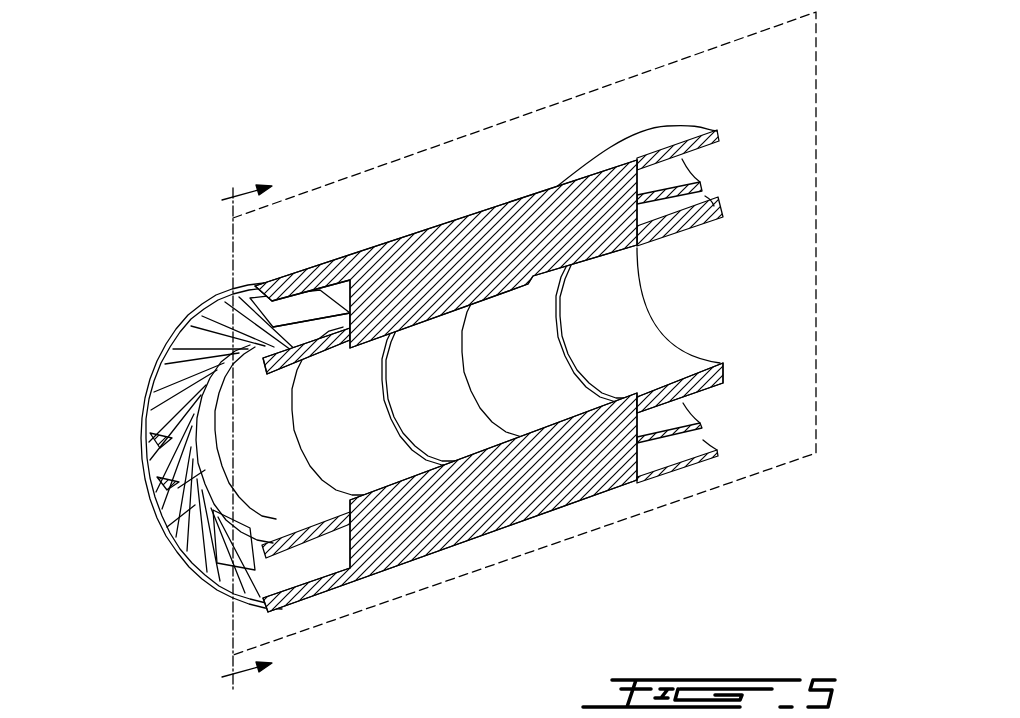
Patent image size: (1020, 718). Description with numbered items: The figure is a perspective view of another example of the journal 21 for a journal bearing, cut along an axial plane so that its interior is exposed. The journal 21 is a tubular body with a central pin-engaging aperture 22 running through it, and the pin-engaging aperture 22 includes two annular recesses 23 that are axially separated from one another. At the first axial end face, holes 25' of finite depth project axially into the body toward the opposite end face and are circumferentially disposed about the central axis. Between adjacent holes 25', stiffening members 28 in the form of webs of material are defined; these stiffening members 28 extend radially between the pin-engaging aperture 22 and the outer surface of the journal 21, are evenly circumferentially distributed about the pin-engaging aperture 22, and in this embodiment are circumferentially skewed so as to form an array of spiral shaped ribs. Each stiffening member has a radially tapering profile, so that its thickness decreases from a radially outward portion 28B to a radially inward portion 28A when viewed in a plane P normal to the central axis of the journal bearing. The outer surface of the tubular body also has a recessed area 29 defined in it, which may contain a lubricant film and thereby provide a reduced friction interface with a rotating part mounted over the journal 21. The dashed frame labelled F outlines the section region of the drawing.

The journal 21 is at (853, 117).
The pin-engaging aperture 22 is at (630, 332).
The annular recesses 23 is at (393, 467).
The holes 25' is at (102, 459).
The stiffening members 28 is at (187, 363).
The radially inward portion 28A is at (180, 488).
The radially outward portion 28B is at (167, 527).
The recessed area 29 is at (523, 195).
The frontal plane F is at (817, 41).
The plane P is at (240, 448).